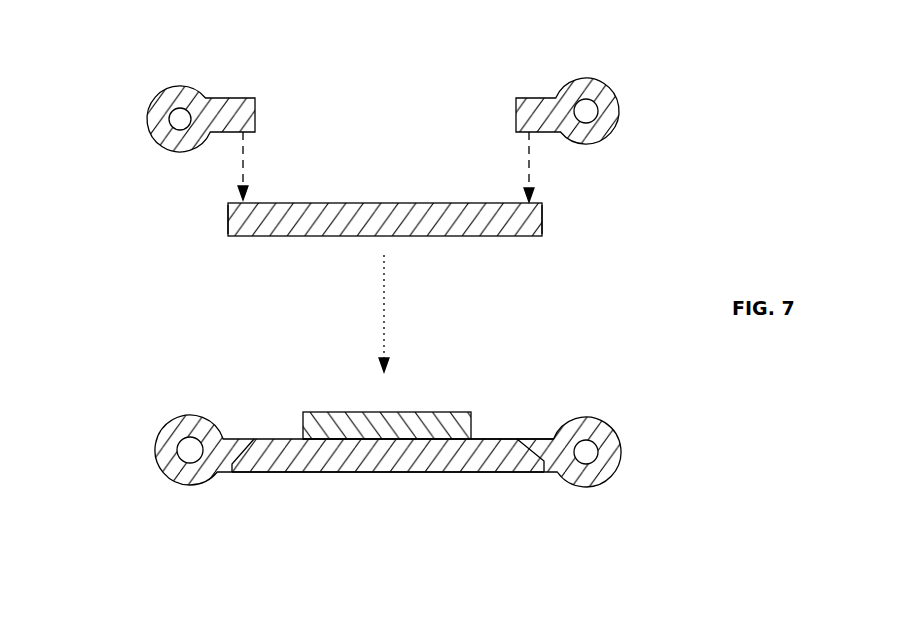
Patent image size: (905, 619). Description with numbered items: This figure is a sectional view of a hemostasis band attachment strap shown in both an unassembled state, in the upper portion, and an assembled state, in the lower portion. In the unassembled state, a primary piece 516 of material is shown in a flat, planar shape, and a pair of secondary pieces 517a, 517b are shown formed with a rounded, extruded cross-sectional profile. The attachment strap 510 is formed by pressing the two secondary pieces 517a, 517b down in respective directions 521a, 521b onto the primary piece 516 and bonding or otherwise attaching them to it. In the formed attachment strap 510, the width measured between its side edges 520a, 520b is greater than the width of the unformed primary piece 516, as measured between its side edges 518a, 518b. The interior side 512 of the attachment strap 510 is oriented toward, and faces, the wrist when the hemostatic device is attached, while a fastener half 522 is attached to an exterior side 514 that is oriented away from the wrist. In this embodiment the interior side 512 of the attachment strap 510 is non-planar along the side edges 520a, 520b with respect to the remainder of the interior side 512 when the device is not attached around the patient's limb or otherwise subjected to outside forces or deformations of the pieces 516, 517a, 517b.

The attachment strap 510 is at (389, 423).
The interior side 512 is at (449, 484).
The exterior side 514 is at (489, 428).
The primary piece 516 is at (380, 218).
The secondary piece 517a is at (185, 95).
The secondary piece 517b is at (590, 86).
The side edge 518a is at (228, 217).
The side edge 518b is at (542, 217).
The side edge 520a is at (142, 449).
The side edge 520b is at (634, 451).
The direction 521a is at (243, 160).
The direction 521b is at (529, 165).
The fastener half 522 is at (398, 417).